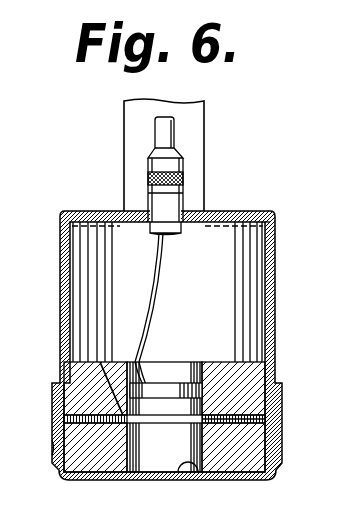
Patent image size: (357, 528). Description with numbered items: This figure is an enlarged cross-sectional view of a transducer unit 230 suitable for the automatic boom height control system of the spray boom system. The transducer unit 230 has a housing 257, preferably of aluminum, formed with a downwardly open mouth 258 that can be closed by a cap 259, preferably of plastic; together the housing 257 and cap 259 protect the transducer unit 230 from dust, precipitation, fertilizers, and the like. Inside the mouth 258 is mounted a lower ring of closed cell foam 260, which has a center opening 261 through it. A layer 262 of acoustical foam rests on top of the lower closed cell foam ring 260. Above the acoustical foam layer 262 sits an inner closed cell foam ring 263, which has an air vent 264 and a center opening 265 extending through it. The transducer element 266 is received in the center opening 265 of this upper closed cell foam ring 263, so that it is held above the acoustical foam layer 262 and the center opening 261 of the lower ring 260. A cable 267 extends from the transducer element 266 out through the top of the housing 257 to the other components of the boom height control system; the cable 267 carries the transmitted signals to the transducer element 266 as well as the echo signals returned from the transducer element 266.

The transducer unit 230 is at (63, 213).
The housing 257 is at (273, 214).
The cable 267 is at (152, 284).
The transducer element 266 is at (163, 383).
The center opening 265 is at (190, 384).
The inner closed cell foam ring 263 is at (251, 403).
The air vent 264 is at (116, 406).
The layer of acoustical foam 262 is at (149, 422).
The mouth 258 is at (272, 437).
The lower ring of closed cell foam 260 is at (114, 465).
The cap 259 is at (60, 471).
The center opening 261 is at (176, 480).